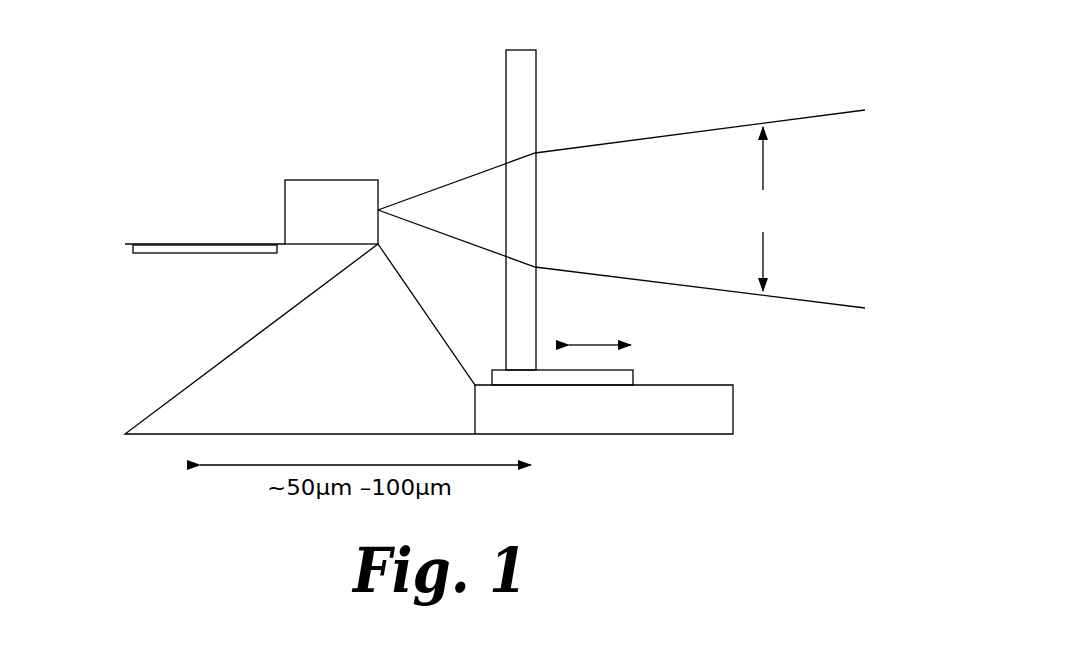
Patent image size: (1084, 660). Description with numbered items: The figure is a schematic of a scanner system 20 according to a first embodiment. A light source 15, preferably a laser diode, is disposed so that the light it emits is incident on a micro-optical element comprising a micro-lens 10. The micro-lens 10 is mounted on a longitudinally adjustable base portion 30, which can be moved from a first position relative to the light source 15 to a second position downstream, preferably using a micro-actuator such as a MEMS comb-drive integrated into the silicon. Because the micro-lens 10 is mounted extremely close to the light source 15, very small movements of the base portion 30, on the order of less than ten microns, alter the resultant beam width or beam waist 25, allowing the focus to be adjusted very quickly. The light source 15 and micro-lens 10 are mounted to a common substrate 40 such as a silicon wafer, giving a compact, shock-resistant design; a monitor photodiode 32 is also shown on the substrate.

The micro-lens 10 is at (535, 107).
The light source 15 is at (323, 178).
The scanner system 20 is at (642, 90).
The beam waist 25 is at (751, 209).
The longitudinally adjustable base portion 30 is at (633, 370).
The monitor photodiode 32 is at (172, 243).
The common substrate 40 is at (705, 410).